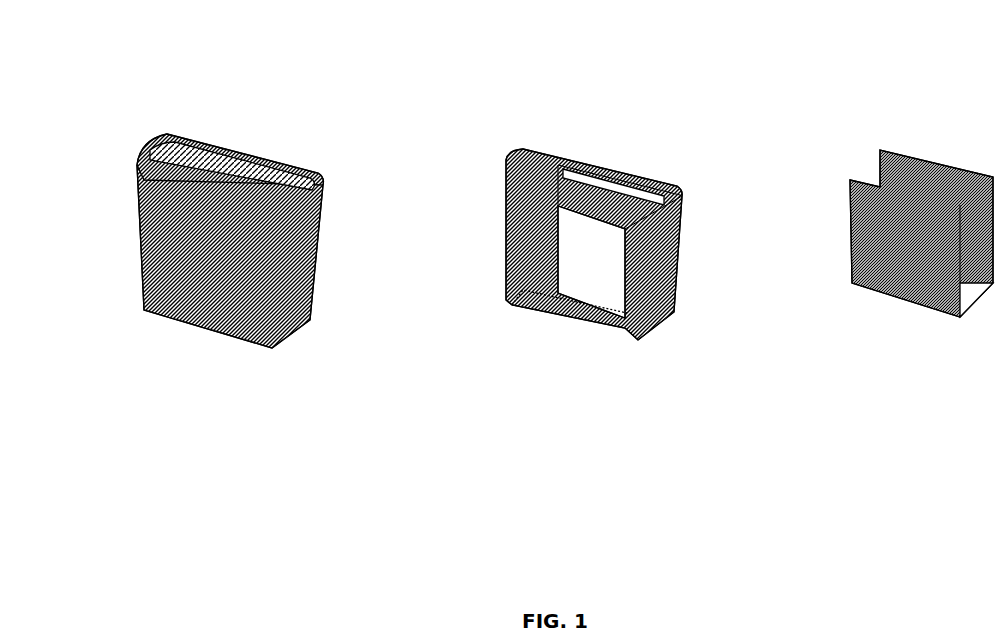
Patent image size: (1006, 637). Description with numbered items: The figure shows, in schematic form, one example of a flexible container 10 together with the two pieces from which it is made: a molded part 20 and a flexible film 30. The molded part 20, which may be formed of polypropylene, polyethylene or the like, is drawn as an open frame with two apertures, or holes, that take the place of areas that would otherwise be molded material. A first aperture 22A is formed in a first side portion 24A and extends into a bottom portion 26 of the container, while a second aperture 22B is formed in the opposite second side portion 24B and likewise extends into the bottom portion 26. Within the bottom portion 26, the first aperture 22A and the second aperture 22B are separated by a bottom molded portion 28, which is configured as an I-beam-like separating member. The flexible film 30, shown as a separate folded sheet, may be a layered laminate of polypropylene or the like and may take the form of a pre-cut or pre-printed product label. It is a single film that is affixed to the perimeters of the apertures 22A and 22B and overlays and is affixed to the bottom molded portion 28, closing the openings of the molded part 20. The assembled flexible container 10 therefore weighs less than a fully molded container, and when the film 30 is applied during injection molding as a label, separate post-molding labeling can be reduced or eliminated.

The flexible container 10 is at (263, 107).
The molded part 20 is at (587, 107).
The first aperture 22A is at (573, 237).
The second aperture 22B is at (623, 192).
The first side portion 24A is at (508, 181).
The second side portion 24B is at (597, 148).
The bottom portion 26 is at (522, 292).
The bottom molded portion 28 is at (572, 303).
The flexible film 30 is at (913, 100).